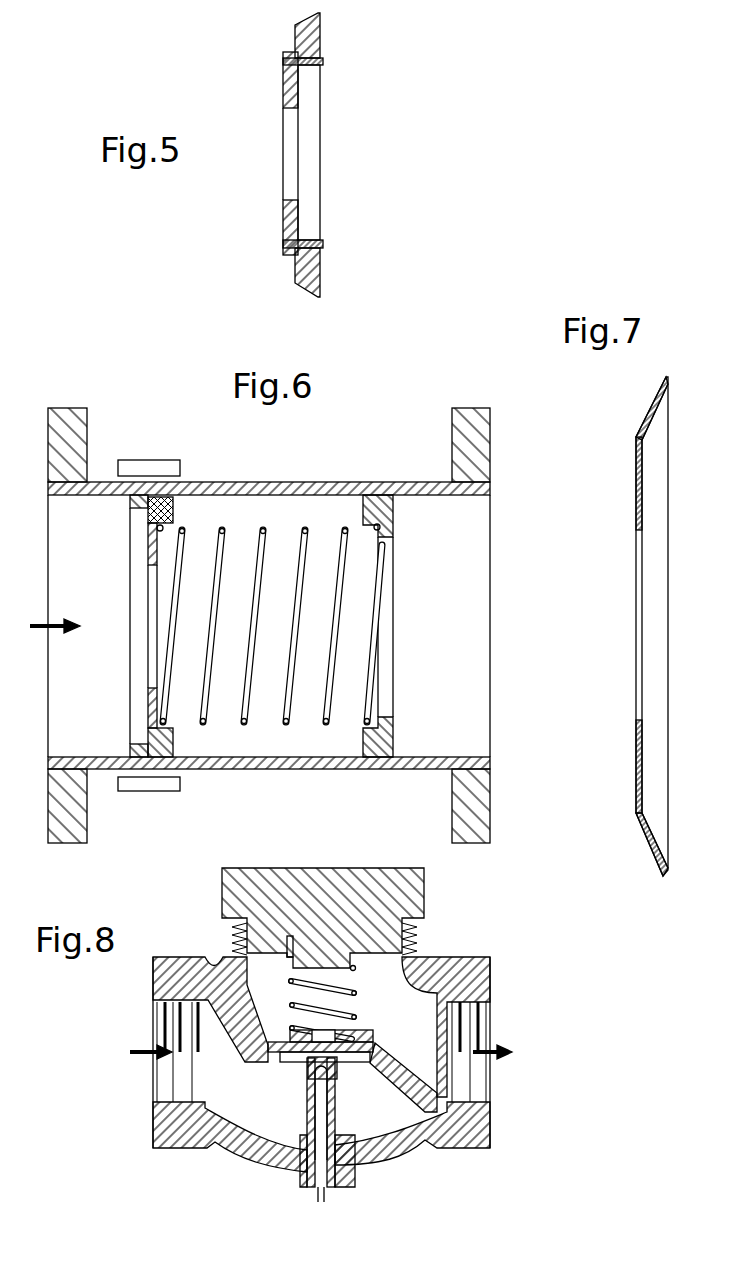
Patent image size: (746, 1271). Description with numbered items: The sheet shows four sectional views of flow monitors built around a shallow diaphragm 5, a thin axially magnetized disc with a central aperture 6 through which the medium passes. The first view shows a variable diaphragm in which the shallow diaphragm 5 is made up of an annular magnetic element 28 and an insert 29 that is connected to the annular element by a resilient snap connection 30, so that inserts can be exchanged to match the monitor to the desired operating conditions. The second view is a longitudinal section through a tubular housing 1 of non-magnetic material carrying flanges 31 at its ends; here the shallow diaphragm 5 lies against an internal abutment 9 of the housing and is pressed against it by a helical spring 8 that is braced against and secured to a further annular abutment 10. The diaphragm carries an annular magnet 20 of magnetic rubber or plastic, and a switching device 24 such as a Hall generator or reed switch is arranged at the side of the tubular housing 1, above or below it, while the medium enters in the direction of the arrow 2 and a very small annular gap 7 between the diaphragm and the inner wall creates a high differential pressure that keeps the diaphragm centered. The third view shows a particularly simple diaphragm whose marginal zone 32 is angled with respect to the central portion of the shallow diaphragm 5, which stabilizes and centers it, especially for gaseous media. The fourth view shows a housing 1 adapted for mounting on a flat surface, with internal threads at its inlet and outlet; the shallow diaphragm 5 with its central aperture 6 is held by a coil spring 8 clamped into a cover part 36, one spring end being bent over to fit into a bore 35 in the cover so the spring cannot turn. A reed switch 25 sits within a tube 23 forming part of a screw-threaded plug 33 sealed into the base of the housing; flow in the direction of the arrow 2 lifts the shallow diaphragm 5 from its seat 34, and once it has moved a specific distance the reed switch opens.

In FIG. 6, the tubular housing 1 is at (310, 490).
In FIG. 8, the tubular housing 1 is at (490, 966).
In FIG. 6, the arrow 2 is at (54, 613).
In FIG. 8, the arrow 2 is at (522, 1062).
In FIG. 5, the shallow diaphragm 5 is at (278, 222).
In FIG. 6, the shallow diaphragm 5 is at (149, 545).
In FIG. 7, the shallow diaphragm 5 is at (636, 498).
In FIG. 8, the shallow diaphragm 5 is at (350, 1036).
In FIG. 5, the central aperture 6 is at (290, 168).
In FIG. 6, the central aperture 6 is at (152, 632).
In FIG. 7, the central aperture 6 is at (637, 672).
In FIG. 8, the central aperture 6 is at (322, 1035).
In FIG. 6, the annular gap 7 is at (168, 757).
In FIG. 6, the helical spring 8 is at (284, 726).
In FIG. 8, the helical spring 8 is at (288, 986).
In FIG. 6, the internal abutment 9 is at (140, 505).
In FIG. 6, the further annular abutment 10 is at (378, 745).
In FIG. 6, the annular magnet 20 is at (173, 498).
In FIG. 8, the tube 23 is at (307, 1112).
In FIG. 6, the switching device 24 is at (140, 470).
In FIG. 8, the reed switch 25 is at (323, 1094).
In FIG. 5, the annular magnetic element 28 is at (321, 32).
In FIG. 5, the insert 29 is at (283, 87).
In FIG. 5, the resilient snap connection 30 is at (323, 63).
In FIG. 6, the flanges 31 is at (66, 420).
In FIG. 7, the marginal zone 32 is at (646, 418).
In FIG. 8, the screw-threaded plug 33 is at (352, 1170).
In FIG. 8, the seat 34 is at (290, 1062).
In FIG. 8, the bore 35 is at (286, 937).
In FIG. 8, the cover part 36 is at (416, 886).